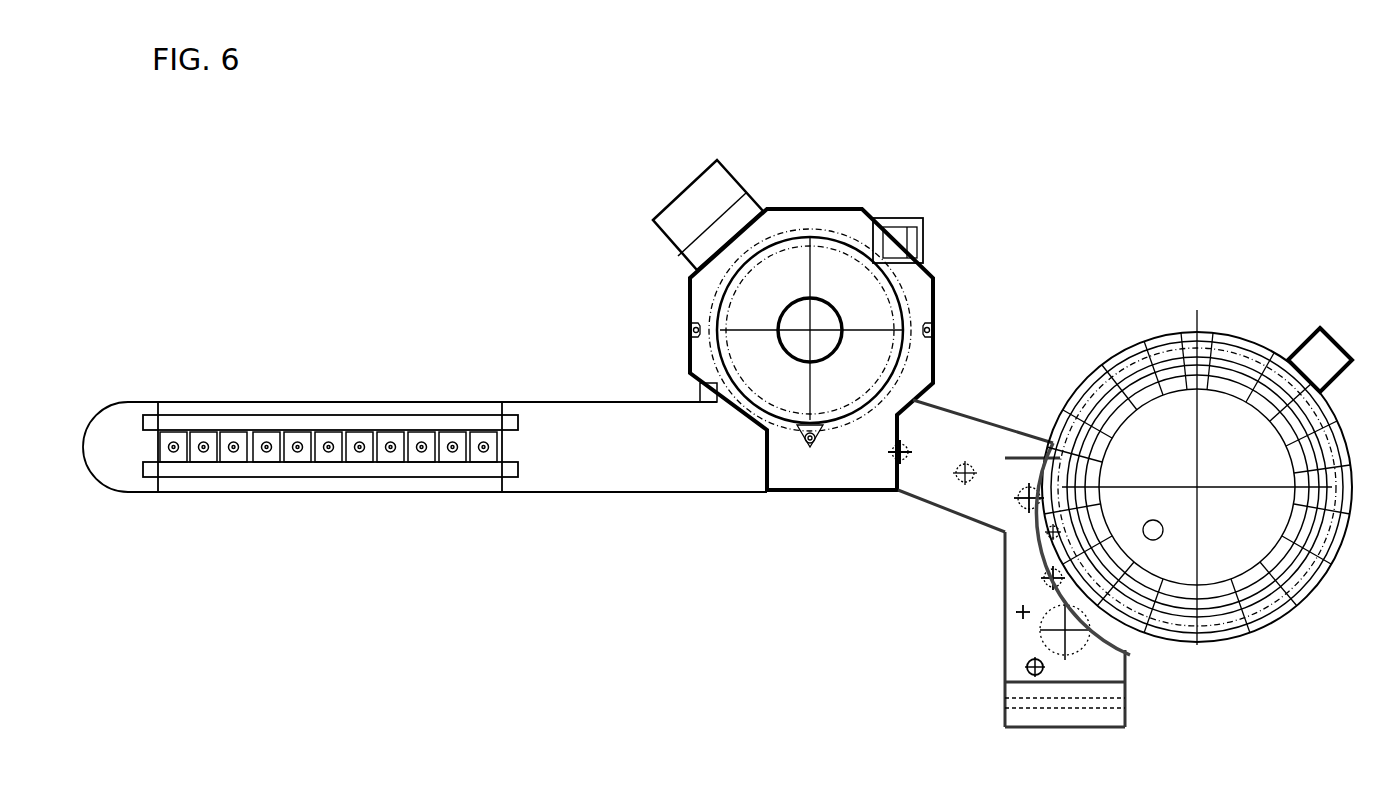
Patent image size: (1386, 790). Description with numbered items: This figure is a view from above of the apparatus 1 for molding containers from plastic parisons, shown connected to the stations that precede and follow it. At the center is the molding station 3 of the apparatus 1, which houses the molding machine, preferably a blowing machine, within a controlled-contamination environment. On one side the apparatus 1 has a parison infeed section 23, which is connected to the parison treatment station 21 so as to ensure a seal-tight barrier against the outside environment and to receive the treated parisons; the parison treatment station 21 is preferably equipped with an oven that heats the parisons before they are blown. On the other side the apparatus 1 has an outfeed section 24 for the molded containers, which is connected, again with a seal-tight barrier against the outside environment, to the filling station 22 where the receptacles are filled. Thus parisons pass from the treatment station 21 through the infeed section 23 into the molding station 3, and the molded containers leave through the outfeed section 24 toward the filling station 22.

The apparatus 1 is at (795, 176).
The molding station 3 is at (843, 200).
The parison treatment station 21 is at (376, 500).
The filling station 22 is at (1194, 308).
The parison infeed section 23 is at (756, 460).
The outfeed section 24 is at (902, 428).